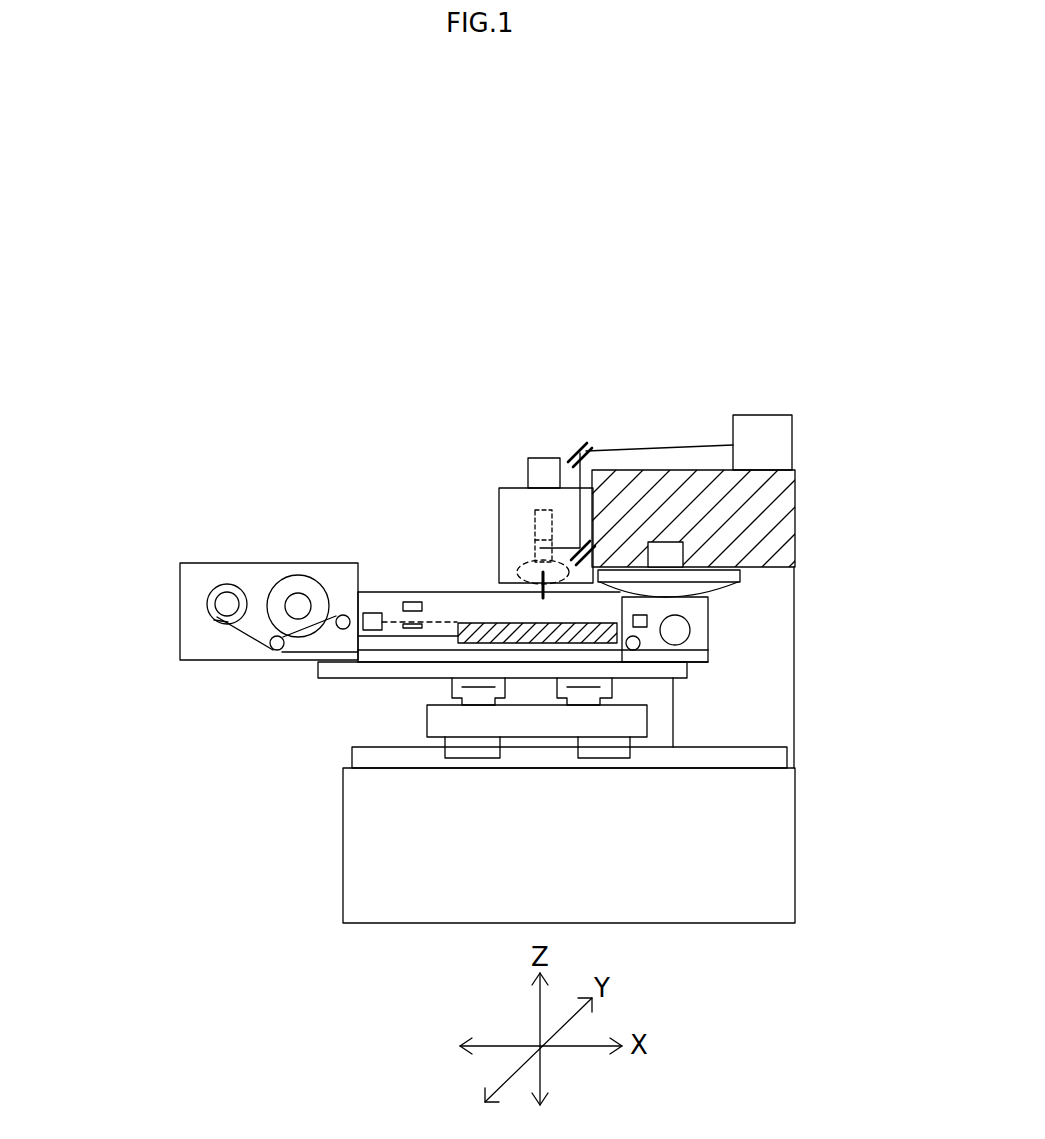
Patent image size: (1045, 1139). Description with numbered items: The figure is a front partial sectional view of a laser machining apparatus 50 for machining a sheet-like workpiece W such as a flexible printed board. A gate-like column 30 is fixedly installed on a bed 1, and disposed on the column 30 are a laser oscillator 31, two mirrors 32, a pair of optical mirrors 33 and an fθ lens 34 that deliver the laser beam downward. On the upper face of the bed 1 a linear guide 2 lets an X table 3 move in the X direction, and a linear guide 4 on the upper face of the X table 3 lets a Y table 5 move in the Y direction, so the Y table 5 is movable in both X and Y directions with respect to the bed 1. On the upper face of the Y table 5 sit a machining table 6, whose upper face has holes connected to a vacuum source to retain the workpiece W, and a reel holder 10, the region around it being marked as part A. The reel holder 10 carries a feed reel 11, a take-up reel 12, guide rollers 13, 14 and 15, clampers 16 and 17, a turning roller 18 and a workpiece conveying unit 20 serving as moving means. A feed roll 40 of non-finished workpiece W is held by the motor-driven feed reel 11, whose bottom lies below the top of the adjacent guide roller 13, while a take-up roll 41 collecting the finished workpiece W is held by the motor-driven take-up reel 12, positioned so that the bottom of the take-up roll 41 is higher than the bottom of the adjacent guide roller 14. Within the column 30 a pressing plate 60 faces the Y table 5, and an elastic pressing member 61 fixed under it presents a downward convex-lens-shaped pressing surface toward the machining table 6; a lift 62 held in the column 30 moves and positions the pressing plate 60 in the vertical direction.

The bed 1 is at (797, 853).
The linear guide 2 is at (743, 747).
The X table 3 is at (427, 722).
The linear guide 4 is at (452, 690).
The Y table 5 is at (688, 672).
The machining table 6 is at (480, 622).
The reel holder 10 is at (180, 628).
The feed reel 11 is at (293, 597).
The take-up reel 12 is at (222, 592).
The guide roller 13 is at (343, 615).
The guide roller 14 is at (257, 637).
The guide roller 15 is at (642, 648).
The clamper 16 is at (380, 613).
The clamper 17 is at (633, 615).
The turning roller 18 is at (690, 628).
The workpiece conveying unit 20 is at (413, 602).
The column 30 is at (795, 618).
The laser oscillator 31 is at (792, 438).
The mirrors 32 is at (572, 448).
The optical mirrors 33 is at (540, 547).
The fθ lens 34 is at (518, 573).
The feed roll 40 is at (275, 582).
The take-up roll 41 is at (218, 619).
The laser machining apparatus 50 is at (593, 340).
The pressing plate 60 is at (685, 546).
The pressing member 61 is at (733, 596).
The lift 62 is at (723, 523).
The workpiece W is at (238, 634).
The part A is at (149, 587).